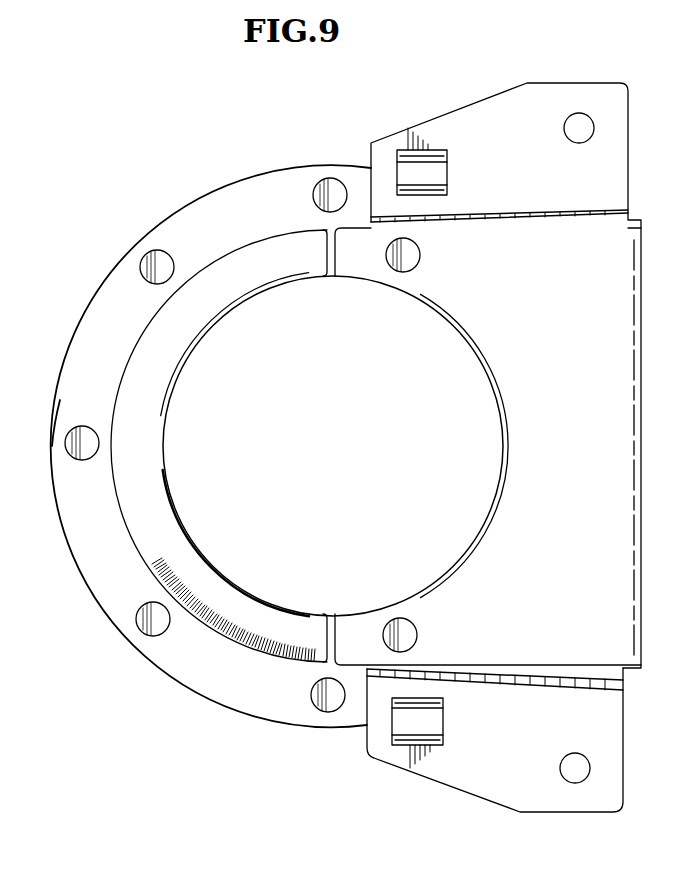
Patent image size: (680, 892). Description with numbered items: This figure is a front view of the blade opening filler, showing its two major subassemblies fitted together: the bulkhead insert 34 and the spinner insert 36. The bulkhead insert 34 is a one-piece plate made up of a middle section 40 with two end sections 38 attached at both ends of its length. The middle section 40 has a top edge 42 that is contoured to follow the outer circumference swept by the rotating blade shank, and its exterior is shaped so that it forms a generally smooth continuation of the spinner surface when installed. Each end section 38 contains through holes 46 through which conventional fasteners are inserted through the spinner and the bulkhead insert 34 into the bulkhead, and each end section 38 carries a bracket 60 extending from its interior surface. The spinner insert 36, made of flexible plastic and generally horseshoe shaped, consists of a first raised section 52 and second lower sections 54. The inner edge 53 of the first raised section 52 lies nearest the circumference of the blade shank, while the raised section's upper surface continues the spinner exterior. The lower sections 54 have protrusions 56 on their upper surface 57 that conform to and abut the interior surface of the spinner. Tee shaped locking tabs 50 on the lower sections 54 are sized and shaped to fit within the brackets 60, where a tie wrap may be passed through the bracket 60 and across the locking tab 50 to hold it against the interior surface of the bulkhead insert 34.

The bulkhead insert 34 is at (0, 46).
The spinner insert 36 is at (182, 170).
The end section 38 is at (570, 93).
The middle section 40 is at (641, 468).
The top edge 42 is at (482, 380).
The through hole 46 is at (565, 129).
The tee shaped locking tab 50 is at (433, 175).
The first raised section 52 is at (205, 563).
The inner edge 53 is at (217, 332).
The second lower section 54 is at (80, 572).
The protrusion 56 is at (72, 430).
The upper surface 57 is at (93, 333).
The bracket 60 is at (418, 155).